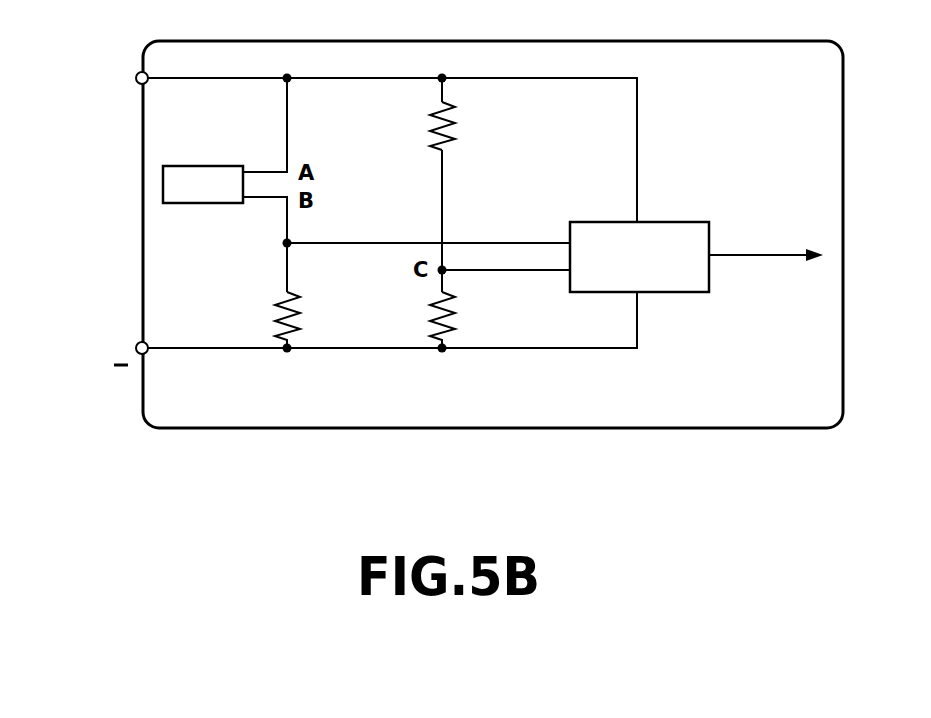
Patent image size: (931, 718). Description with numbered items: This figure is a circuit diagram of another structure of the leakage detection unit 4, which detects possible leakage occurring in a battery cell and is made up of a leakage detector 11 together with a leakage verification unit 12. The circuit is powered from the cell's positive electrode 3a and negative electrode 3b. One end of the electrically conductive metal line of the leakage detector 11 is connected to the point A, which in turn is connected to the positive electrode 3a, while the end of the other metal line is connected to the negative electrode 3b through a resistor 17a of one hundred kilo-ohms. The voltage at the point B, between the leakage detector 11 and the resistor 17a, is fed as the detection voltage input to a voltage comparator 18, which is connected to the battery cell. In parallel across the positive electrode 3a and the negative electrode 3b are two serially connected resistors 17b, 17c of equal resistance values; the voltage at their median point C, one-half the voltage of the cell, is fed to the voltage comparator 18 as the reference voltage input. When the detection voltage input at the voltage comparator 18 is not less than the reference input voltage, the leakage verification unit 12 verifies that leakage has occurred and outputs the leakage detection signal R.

The positive electrode 3a is at (136, 78).
The negative electrode 3b is at (136, 348).
The leakage detection unit 4 is at (745, 430).
The leakage detector 11 is at (202, 205).
The leakage verification unit 12 is at (385, 357).
The resistor 17a is at (301, 312).
The resistor 17b is at (456, 122).
The resistor 17c is at (456, 311).
The voltage comparator 18 is at (598, 221).